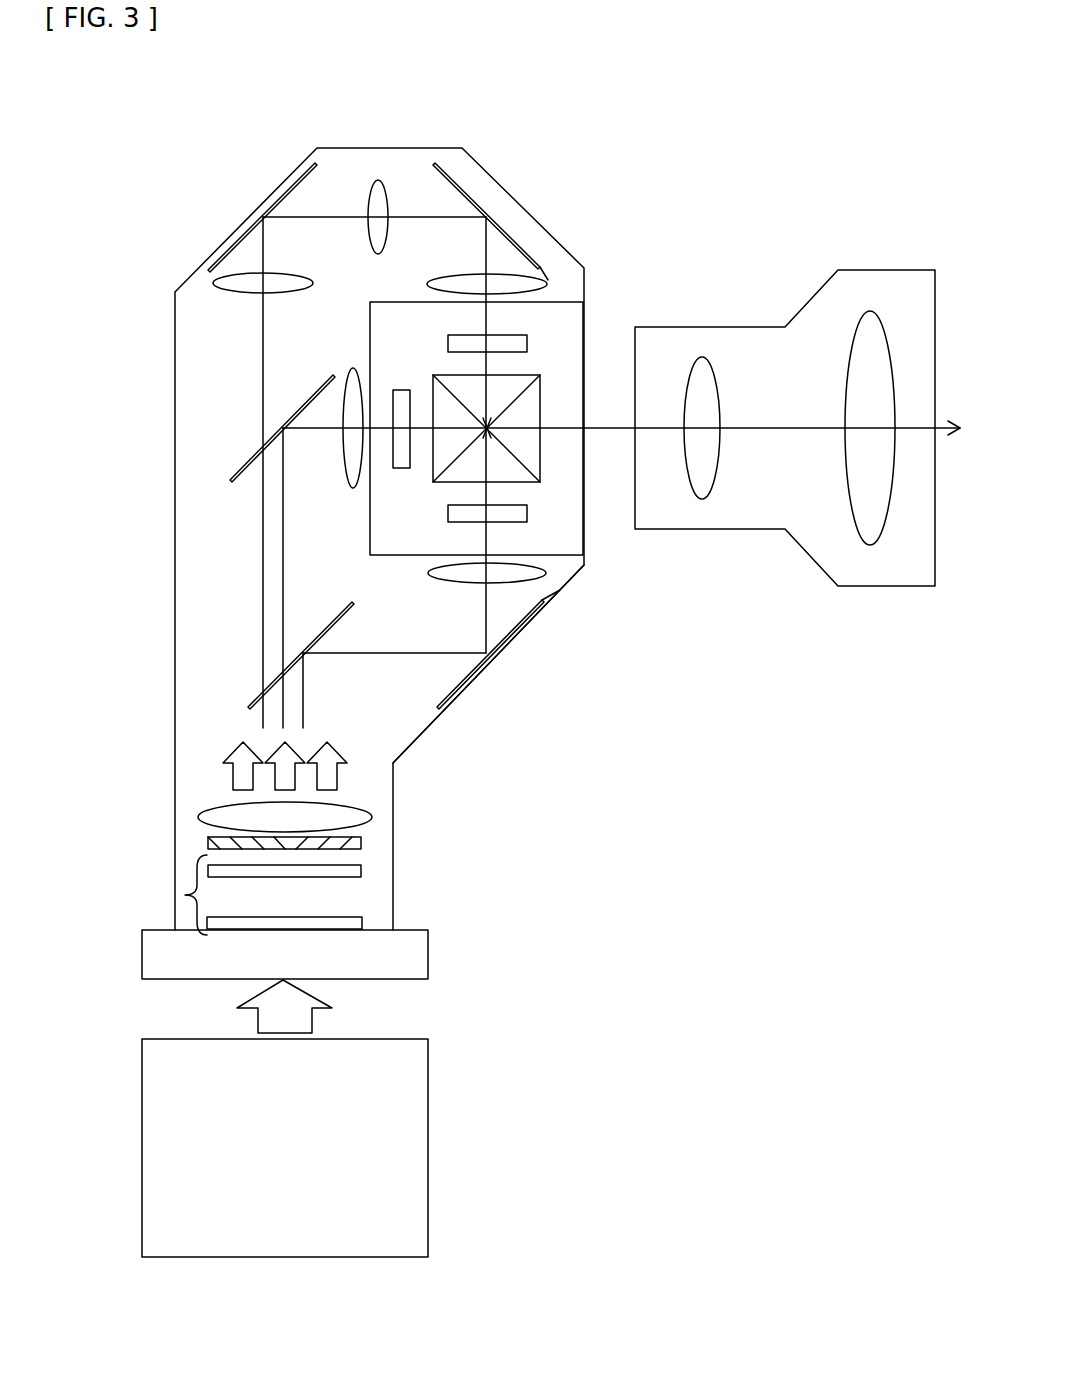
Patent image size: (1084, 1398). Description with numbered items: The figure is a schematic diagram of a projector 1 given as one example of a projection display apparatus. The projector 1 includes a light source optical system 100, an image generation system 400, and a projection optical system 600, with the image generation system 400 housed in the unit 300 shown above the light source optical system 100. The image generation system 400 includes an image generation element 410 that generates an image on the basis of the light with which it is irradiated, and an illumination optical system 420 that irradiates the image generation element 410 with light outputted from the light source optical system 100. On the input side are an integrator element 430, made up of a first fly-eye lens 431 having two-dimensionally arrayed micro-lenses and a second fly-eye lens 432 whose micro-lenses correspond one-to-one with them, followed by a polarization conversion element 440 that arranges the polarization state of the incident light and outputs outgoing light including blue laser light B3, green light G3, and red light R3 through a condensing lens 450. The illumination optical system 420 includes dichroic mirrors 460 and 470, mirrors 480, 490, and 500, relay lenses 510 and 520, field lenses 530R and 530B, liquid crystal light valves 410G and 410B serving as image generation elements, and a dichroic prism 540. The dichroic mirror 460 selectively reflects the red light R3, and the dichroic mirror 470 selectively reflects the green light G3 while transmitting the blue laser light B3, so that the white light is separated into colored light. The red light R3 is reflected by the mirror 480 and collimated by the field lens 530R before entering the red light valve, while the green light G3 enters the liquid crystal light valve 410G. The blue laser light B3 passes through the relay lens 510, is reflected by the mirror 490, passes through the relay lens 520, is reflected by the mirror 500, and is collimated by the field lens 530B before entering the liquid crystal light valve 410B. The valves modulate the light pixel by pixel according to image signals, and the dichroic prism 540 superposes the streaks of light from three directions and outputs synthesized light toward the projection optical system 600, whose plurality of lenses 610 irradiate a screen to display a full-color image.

The projector 1 is at (702, 115).
The light source optical system 100 is at (428, 1147).
The optical unit 300 is at (525, 145).
The image generation system 400 is at (453, 703).
The image generation element 410 is at (547, 570).
The liquid crystal light valve 410B is at (528, 343).
The liquid crystal light valve 410G is at (402, 390).
The illumination optical system 420 is at (258, 542).
The integrator element 430 is at (182, 895).
The first fly-eye lens 431 is at (347, 916).
The second fly-eye lens 432 is at (362, 867).
The polarization conversion element 440 is at (362, 840).
The condensing lens 450 is at (370, 813).
The dichroic mirror 460 is at (253, 697).
The dichroic mirror 470 is at (250, 458).
The mirror 480 is at (513, 643).
The mirror 490 is at (256, 213).
The mirror 500 is at (488, 217).
The relay lens 510 is at (210, 282).
The relay lens 520 is at (378, 180).
The field lens 530B is at (548, 280).
The field lens 530R is at (560, 590).
The dichroic prism 540 is at (541, 390).
The projection optical system 600 is at (889, 586).
The lenses 610 is at (868, 307).
The blue laser light B3 is at (343, 462).
The green light G3 is at (226, 750).
The red light R3 is at (340, 775).